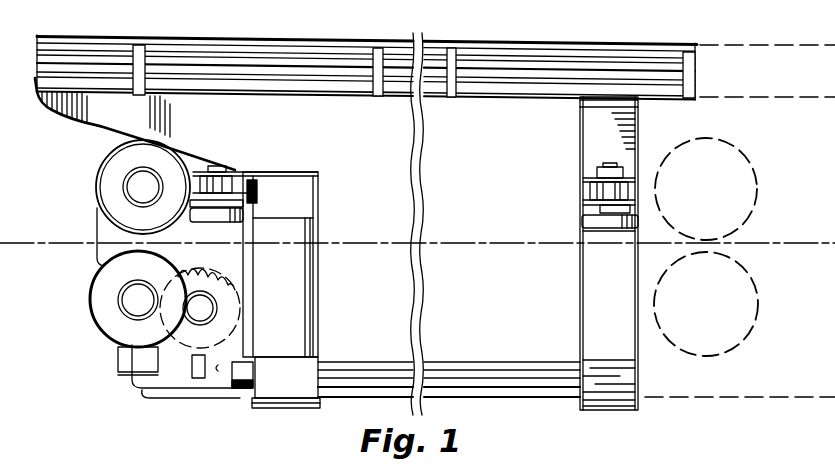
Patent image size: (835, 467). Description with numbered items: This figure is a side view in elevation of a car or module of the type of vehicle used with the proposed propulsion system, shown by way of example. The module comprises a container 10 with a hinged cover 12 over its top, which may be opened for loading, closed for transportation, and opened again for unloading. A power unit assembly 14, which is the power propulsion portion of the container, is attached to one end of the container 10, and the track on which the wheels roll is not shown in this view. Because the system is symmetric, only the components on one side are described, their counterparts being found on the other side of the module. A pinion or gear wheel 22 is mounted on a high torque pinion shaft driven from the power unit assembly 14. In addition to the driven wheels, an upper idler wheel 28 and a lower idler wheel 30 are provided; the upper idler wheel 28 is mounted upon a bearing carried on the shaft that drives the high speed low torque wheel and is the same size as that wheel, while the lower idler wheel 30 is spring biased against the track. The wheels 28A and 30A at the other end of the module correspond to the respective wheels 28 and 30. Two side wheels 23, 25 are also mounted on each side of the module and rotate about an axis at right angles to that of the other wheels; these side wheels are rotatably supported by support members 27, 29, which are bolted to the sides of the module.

The container 10 is at (63, 116).
The hinged cover 12 is at (223, 38).
The power unit assembly 14 is at (96, 226).
The pinion or gear wheel 22 is at (230, 288).
The side wheel 23 is at (246, 218).
The side wheel 25 is at (582, 222).
The support member 27 is at (258, 172).
The upper idler wheel 28 is at (97, 172).
The upper idler wheel 28A is at (752, 168).
The support member 29 is at (596, 178).
The lower idler wheel 30 is at (93, 296).
The lower idler wheel 30A is at (755, 290).